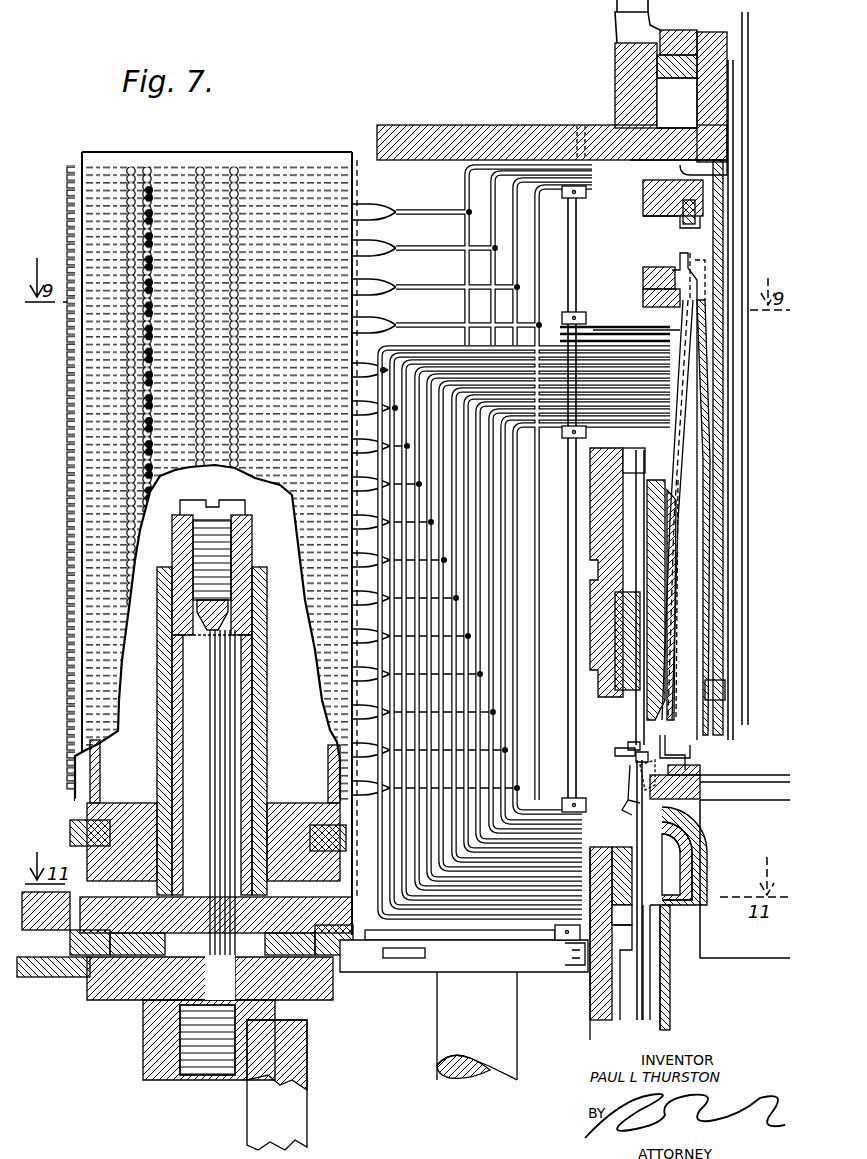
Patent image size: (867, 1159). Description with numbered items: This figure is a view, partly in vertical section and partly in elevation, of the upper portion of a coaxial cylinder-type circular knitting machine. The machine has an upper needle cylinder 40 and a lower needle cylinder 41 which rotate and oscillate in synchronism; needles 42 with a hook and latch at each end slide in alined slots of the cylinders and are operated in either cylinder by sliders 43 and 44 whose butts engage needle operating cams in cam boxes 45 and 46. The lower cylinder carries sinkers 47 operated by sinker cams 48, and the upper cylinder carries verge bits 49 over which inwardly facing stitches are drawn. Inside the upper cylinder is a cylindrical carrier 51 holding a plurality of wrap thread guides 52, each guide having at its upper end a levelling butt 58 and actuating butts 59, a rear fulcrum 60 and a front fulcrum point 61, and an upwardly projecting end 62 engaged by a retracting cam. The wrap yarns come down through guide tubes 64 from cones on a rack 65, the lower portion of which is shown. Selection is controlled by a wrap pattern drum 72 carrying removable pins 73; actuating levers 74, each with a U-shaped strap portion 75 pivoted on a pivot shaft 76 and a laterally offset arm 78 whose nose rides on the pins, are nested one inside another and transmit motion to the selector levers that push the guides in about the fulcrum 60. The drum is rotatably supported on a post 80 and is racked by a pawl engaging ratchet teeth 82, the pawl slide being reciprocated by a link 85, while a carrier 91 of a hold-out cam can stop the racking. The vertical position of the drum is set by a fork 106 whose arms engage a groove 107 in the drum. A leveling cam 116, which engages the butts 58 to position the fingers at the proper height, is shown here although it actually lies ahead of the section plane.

The upper needle cylinder 40 is at (665, 656).
The lower needle cylinder 41 is at (670, 1008).
The needles 42 is at (637, 838).
The slider 43 is at (636, 722).
The slider 44 is at (643, 1015).
The cam box 45 is at (592, 560).
The cam box 46 is at (590, 1000).
The sinkers 47 is at (690, 840).
The sinker cams 48 is at (700, 818).
The verge bits 49 is at (645, 790).
The cylindrical carrier 51 is at (710, 612).
The wrap thread guide 52 is at (688, 502).
The levelling butt 58 is at (643, 300).
The actuating butts 59 is at (668, 326).
The fulcrum 60 is at (690, 487).
The fulcrum point 61 is at (680, 478).
The upwardly projecting end 62 is at (678, 250).
The guide tubes 64 is at (748, 38).
The rack 65 is at (615, 30).
The wrap pattern drum 72 is at (100, 362).
The pins 73 is at (80, 462).
The actuating levers 74 is at (470, 520).
The U-shaped strap portion 75 is at (490, 623).
The pivot shaft 76 is at (566, 722).
The laterally offset arm 78 is at (370, 218).
The post 80 is at (172, 778).
The ratchet teeth 82 is at (362, 930).
The link 85 is at (455, 955).
The carrier 91 is at (45, 975).
The fork 106 is at (70, 834).
The groove 107 is at (117, 803).
The leveling cam 116 is at (645, 262).